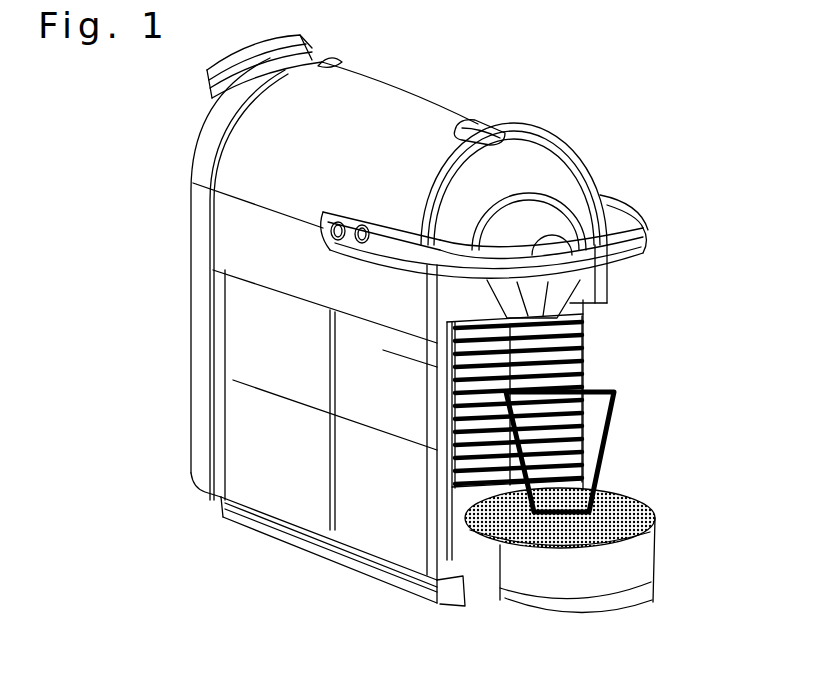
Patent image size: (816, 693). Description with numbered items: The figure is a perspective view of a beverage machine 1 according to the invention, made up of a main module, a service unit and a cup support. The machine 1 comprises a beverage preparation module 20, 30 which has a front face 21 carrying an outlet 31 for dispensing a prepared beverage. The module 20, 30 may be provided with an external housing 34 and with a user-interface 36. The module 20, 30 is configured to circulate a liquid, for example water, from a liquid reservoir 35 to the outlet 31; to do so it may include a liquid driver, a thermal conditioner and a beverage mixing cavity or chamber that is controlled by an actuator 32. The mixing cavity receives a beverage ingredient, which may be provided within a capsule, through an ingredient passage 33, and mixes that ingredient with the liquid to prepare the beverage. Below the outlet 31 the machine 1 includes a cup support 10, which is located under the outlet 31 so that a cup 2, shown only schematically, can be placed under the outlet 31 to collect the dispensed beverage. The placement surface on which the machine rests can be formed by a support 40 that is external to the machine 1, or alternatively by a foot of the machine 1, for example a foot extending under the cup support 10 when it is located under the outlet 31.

The machine 1 is at (695, 75).
The cup 2 is at (605, 448).
The cup support 10 is at (688, 495).
The beverage preparation module 20 is at (617, 360).
The front face 21 is at (622, 281).
The beverage preparation module 30 is at (505, 75).
The outlet 31 is at (555, 315).
The actuator 32 is at (640, 231).
The ingredient passage 33 is at (480, 122).
The external housing 34 is at (405, 110).
The liquid reservoir 35 is at (194, 233).
The user-interface 36 is at (338, 62).
The support 40 is at (220, 577).